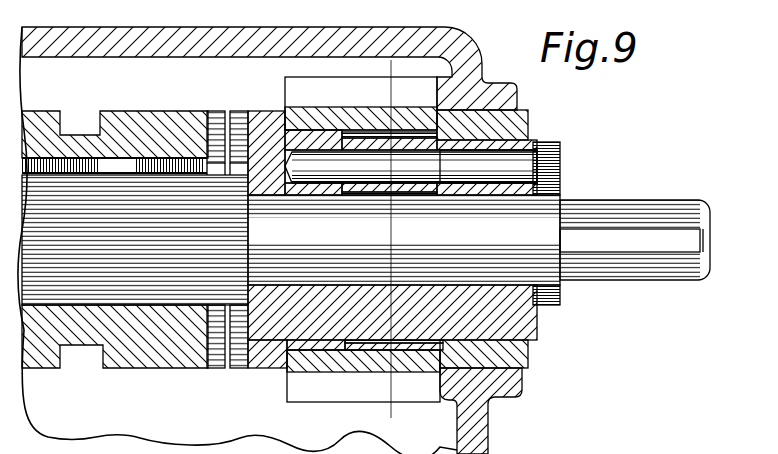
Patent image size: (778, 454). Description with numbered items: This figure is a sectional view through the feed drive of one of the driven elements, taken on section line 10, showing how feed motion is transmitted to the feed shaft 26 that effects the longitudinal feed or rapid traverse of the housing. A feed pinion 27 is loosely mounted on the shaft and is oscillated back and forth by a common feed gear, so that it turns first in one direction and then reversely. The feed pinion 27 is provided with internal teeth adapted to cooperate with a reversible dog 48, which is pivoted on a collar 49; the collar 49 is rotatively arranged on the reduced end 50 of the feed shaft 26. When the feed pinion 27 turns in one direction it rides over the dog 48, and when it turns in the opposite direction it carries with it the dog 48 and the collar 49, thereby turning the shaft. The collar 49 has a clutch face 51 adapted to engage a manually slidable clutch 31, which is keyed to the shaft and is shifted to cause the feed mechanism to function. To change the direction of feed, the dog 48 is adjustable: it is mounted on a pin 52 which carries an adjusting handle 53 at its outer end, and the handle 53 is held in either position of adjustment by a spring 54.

The section line 10 is at (420, 67).
The feed shaft 26 is at (675, 213).
The feed pinion 27 is at (334, 377).
The slidable clutch 31 is at (137, 353).
The reversible dog 48 is at (421, 187).
The collar 49 is at (491, 188).
The reduced end 50 is at (411, 197).
The clutch face 51 is at (238, 116).
The pin 52 is at (509, 163).
The adjusting handle 53 is at (562, 146).
The spring 54 is at (561, 297).